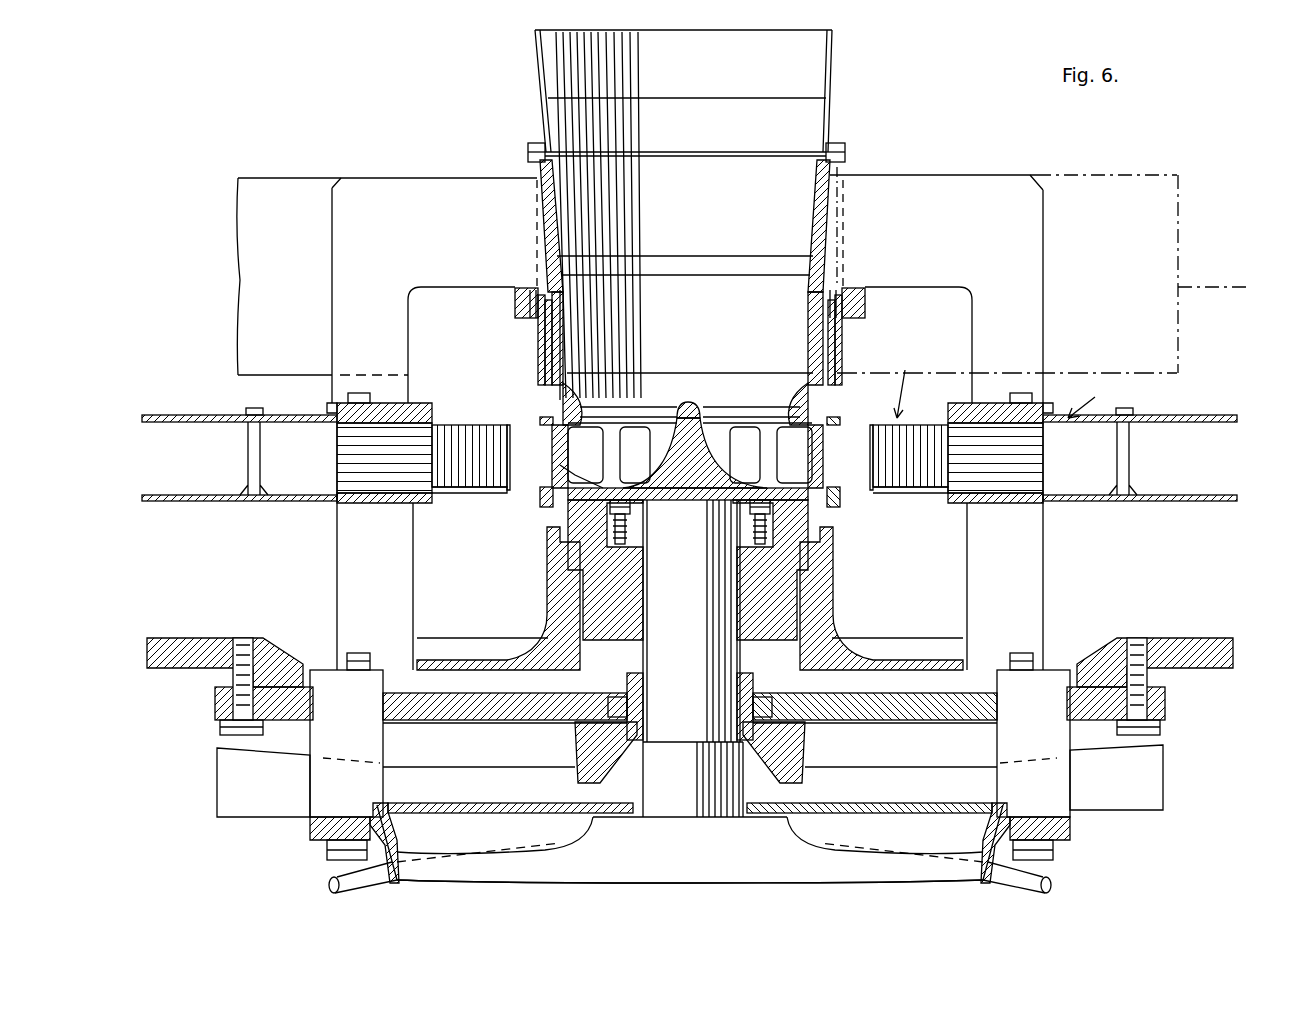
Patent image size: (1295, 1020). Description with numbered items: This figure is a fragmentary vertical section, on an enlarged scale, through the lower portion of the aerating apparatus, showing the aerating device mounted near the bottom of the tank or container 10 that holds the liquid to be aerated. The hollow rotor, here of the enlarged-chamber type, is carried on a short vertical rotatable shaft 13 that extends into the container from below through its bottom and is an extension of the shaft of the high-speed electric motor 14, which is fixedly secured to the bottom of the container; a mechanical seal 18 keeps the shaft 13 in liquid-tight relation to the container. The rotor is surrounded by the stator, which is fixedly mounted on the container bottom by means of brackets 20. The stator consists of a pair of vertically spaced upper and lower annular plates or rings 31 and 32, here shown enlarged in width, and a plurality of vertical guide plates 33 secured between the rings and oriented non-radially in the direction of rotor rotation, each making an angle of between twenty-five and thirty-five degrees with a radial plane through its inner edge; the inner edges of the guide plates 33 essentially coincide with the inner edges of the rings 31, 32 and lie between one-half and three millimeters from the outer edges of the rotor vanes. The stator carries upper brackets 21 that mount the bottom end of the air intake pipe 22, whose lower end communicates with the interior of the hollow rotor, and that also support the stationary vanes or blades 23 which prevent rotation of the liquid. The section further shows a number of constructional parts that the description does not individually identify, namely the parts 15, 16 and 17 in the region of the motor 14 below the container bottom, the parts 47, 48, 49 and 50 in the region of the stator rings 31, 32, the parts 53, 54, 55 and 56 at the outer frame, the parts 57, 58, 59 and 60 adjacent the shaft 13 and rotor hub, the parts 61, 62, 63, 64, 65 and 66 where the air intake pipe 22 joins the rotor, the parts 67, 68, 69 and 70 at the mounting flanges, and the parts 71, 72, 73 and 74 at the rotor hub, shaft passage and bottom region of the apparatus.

The tank or container 10 is at (1205, 640).
The shaft 13 is at (727, 660).
The electric motor 14 is at (700, 870).
The nut 15 is at (327, 850).
The support block 16 is at (376, 743).
The blade 17 is at (690, 775).
The mechanical seal 18 is at (637, 697).
The brackets 20 is at (352, 570).
The upper brackets 21 is at (337, 247).
The air intake pipe 22 is at (540, 85).
The stationary vanes or blades 23 is at (275, 185).
The upper annular plate or ring 31 is at (380, 420).
The lower annular plate or ring 32 is at (975, 503).
The vertical guide plates 33 is at (1025, 448).
The stator winding 47 is at (905, 497).
The stator winding 48 is at (453, 425).
The winding end 49 is at (458, 495).
The winding end 50 is at (503, 495).
The upper frame plate 53 is at (1198, 418).
The lower frame plate 54 is at (183, 495).
The tie bolt 55 is at (262, 472).
The nut 56 is at (256, 408).
The bearing block 57 is at (633, 647).
The bolt 58 is at (645, 540).
The nut 59 is at (640, 520).
The bearing 60 is at (620, 490).
The inner liner 61 is at (600, 340).
The seal ring 62 is at (540, 325).
The bolt 63 is at (537, 295).
The liner 64 is at (603, 298).
The seal ring 65 is at (545, 345).
The tapered wall 66 is at (545, 222).
The bolt 67 is at (225, 733).
The flange plate 68 is at (222, 680).
The bracket 69 is at (465, 660).
The nut 70 is at (360, 653).
The hub 71 is at (722, 478).
The flare 72 is at (586, 406).
The sleeve 73 is at (632, 728).
The pipe 74 is at (340, 873).